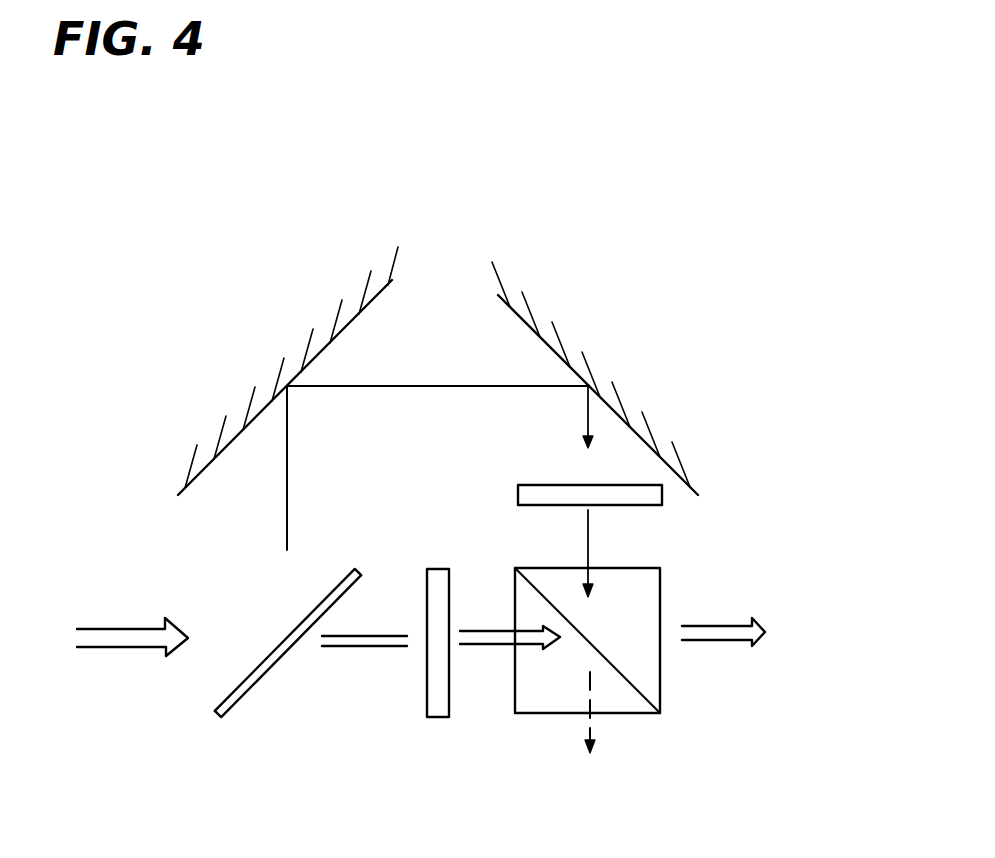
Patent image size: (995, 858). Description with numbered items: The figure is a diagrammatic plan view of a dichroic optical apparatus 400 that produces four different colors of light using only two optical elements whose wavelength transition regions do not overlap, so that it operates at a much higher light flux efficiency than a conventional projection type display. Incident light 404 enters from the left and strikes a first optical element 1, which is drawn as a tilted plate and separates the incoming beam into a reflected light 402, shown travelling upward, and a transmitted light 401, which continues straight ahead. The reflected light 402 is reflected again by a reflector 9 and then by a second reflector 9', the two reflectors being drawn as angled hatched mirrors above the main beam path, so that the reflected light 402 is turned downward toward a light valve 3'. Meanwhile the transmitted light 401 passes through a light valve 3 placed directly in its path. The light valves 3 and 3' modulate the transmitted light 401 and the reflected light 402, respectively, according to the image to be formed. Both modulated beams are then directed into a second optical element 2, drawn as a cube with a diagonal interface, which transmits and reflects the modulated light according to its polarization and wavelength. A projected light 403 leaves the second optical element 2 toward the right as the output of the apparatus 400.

The first optical element 1 is at (223, 720).
The second optical element 2 is at (662, 690).
The light valve 3 is at (428, 692).
The light valve 3' is at (633, 516).
The reflector 9 is at (288, 355).
The reflector 9' is at (585, 351).
The dichroic optical apparatus 400 is at (642, 346).
The transmitted light 401 is at (350, 650).
The reflected light 402 is at (287, 455).
The projected light 403 is at (723, 623).
The incident light 404 is at (108, 648).